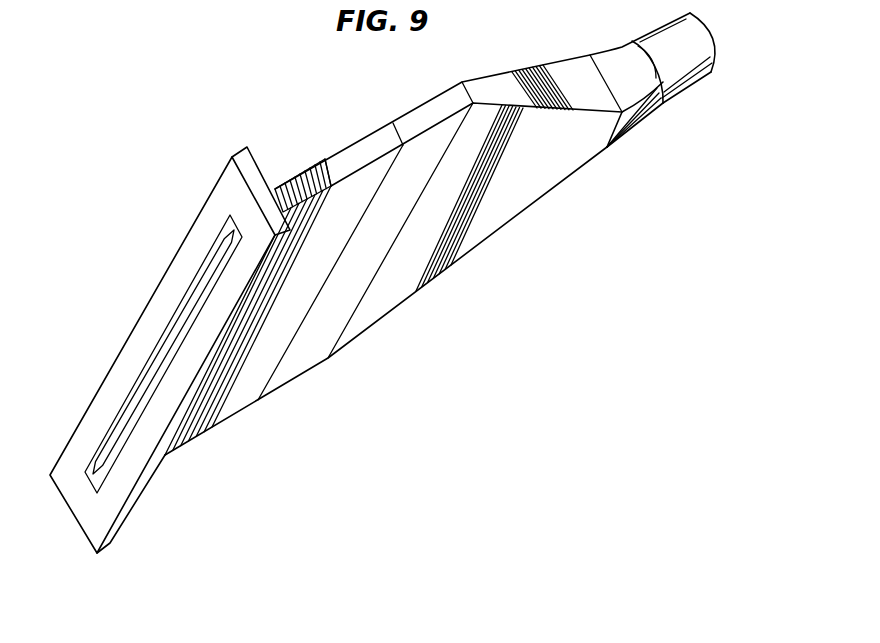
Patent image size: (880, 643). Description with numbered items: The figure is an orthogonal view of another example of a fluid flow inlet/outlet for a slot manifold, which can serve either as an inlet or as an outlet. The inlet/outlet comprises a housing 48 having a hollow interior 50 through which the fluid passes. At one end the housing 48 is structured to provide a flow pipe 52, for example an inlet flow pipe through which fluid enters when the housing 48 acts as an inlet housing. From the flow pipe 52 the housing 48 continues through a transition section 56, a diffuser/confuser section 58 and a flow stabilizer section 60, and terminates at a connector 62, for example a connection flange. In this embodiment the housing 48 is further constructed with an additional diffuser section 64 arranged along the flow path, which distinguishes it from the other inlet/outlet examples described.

The housing 48 is at (327, 172).
The hollow interior 50 is at (176, 334).
The flow pipe 52 is at (692, 88).
The transition section 56 is at (643, 117).
The diffuser/confuser section 58 is at (498, 210).
The flow stabilizer section 60 is at (222, 411).
The connector 62 is at (90, 513).
The additional diffuser section 64 is at (302, 363).